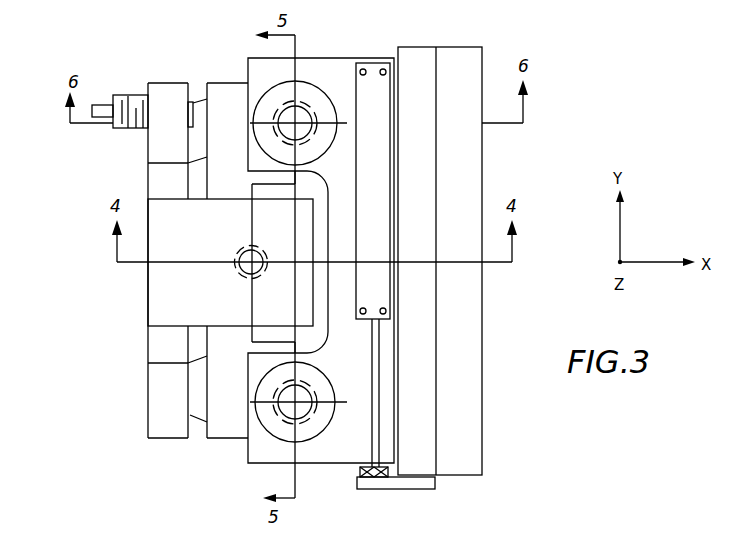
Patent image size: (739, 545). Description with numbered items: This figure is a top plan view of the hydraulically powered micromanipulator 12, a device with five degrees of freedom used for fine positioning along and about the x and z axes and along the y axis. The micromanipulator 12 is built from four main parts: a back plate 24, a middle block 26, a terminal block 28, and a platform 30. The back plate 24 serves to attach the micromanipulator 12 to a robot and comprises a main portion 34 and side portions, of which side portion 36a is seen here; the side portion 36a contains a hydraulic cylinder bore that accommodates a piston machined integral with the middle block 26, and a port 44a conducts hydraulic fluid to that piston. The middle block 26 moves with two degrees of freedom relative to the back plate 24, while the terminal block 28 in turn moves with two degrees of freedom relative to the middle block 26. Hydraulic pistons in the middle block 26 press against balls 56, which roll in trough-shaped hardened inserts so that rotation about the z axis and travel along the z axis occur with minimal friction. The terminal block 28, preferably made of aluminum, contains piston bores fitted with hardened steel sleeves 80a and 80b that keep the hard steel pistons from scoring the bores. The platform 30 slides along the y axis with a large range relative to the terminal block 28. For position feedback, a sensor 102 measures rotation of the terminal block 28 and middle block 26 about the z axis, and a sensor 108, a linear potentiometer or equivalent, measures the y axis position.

The micromanipulator 12 is at (102, 306).
The back plate 24 is at (140, 393).
The middle block 26 is at (221, 447).
The terminal block 28 is at (330, 472).
The platform 30 is at (492, 465).
The main portion 34 is at (165, 92).
The side portion 36a is at (163, 285).
The port 44a is at (241, 252).
The ball 56 is at (201, 105).
The hardened steel sleeve 80a is at (312, 374).
The hardened steel sleeve 80b is at (318, 100).
The sensor 102 is at (133, 96).
The sensor 108 is at (373, 265).